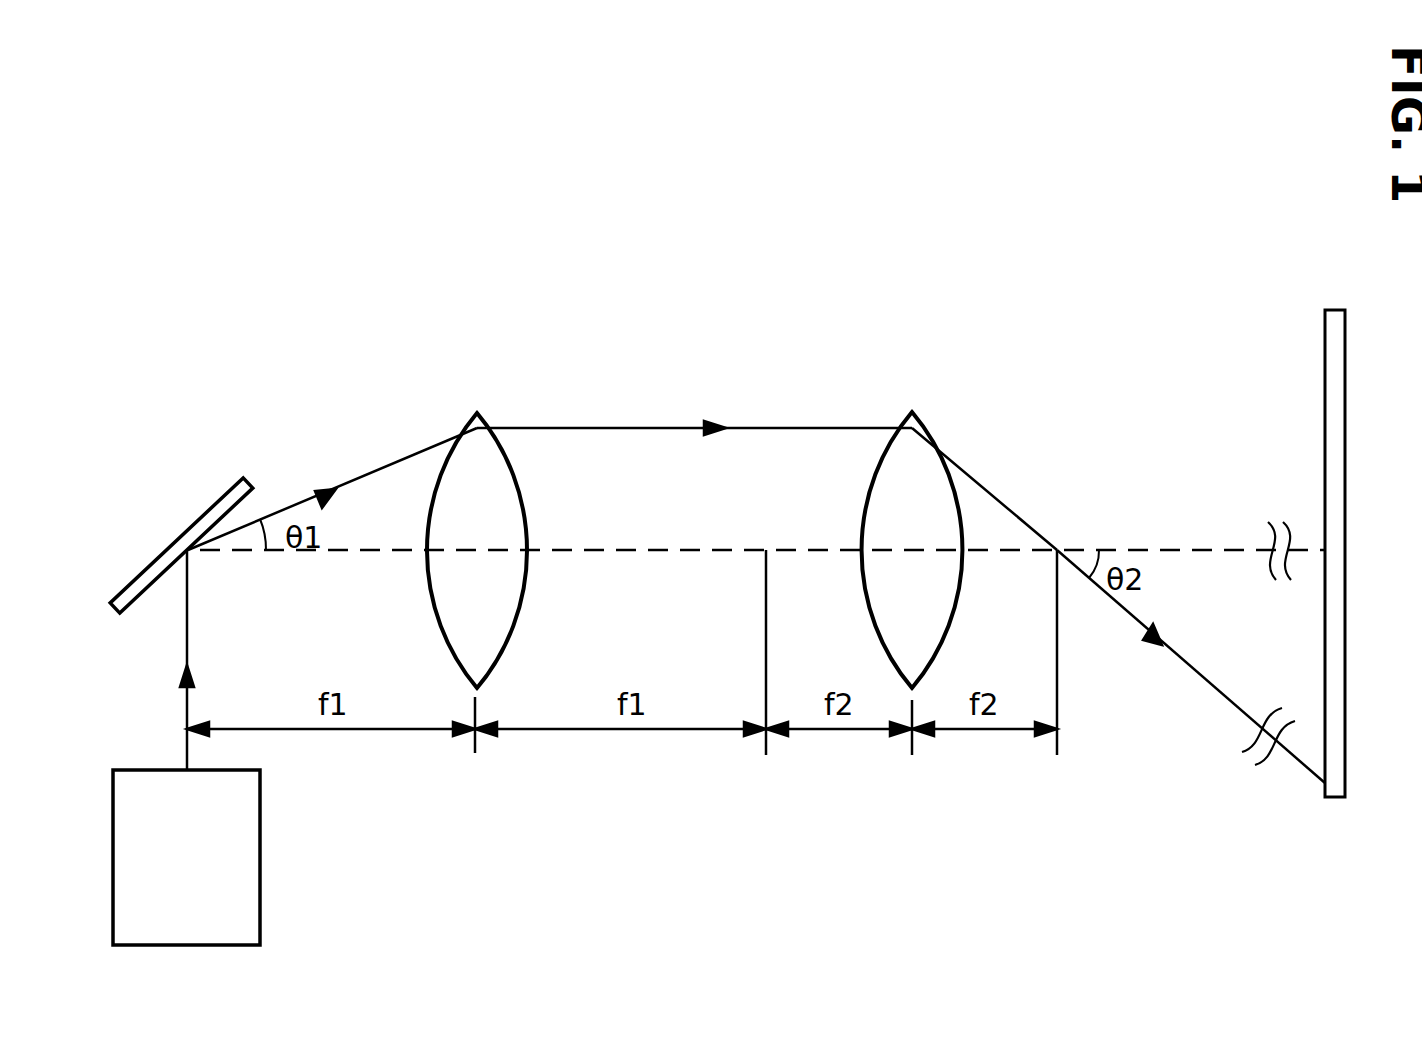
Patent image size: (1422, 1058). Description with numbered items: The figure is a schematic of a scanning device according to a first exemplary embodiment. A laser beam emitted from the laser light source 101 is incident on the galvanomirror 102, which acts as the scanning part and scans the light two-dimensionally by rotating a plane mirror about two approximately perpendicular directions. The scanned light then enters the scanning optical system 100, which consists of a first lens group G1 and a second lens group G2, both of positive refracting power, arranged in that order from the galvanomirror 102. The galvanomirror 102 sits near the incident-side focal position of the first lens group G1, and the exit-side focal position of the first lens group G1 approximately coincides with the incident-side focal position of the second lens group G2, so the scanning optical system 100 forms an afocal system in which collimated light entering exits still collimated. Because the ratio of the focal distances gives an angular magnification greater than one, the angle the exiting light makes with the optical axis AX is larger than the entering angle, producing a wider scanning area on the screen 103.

The scanning optical system 100 is at (729, 483).
The laser light source 101 is at (260, 913).
The galvanomirror 102 is at (245, 488).
The screen 103 is at (1338, 326).
The first lens group G1 is at (481, 417).
The second lens group G2 is at (947, 526).
The optical axis AX is at (1190, 545).